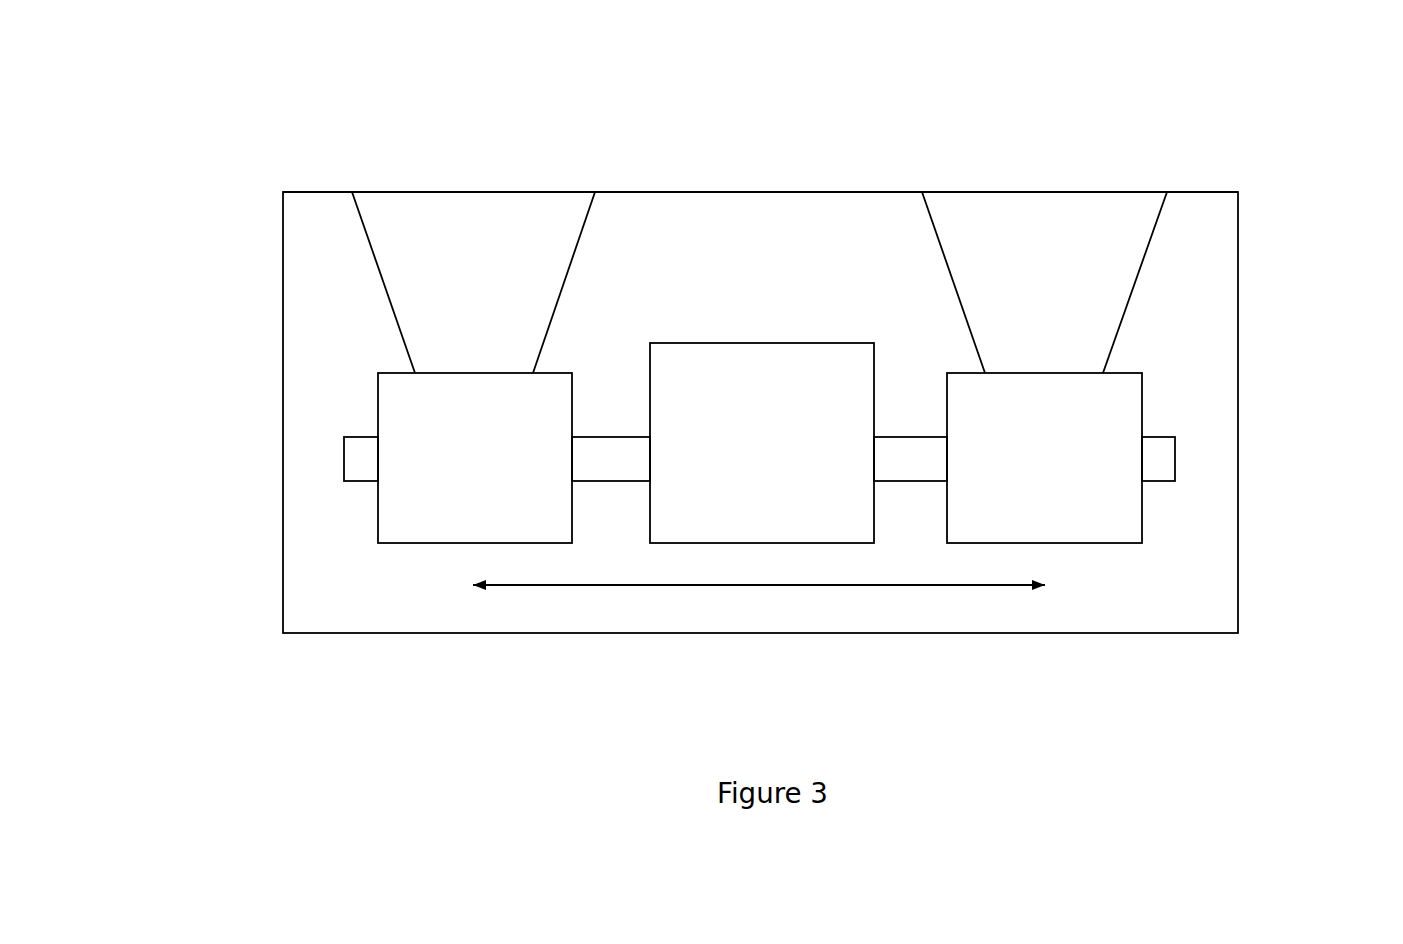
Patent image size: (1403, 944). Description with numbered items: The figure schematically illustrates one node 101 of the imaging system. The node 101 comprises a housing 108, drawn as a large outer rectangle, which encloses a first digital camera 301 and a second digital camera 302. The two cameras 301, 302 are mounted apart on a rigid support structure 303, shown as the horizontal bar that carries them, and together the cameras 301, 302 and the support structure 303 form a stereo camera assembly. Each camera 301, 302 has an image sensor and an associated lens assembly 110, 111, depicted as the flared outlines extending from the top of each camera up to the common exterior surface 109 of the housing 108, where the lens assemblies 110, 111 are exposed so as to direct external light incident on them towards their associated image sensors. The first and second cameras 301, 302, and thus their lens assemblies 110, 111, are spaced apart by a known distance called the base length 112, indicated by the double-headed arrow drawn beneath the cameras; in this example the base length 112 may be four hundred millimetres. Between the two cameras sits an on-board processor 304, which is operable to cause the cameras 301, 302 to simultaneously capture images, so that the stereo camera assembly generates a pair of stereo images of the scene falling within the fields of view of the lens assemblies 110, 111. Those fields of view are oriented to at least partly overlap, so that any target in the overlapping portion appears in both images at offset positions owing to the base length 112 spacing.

The node 101 is at (184, 197).
The housing 108 is at (283, 449).
The exterior surface 109 is at (1199, 192).
The lens assembly 110 is at (372, 245).
The lens assembly 111 is at (936, 231).
The base length 112 is at (960, 586).
The first digital camera 301 is at (506, 472).
The second digital camera 302 is at (1063, 473).
The rigid support structure 303 is at (1163, 457).
The on-board processor 304 is at (790, 463).